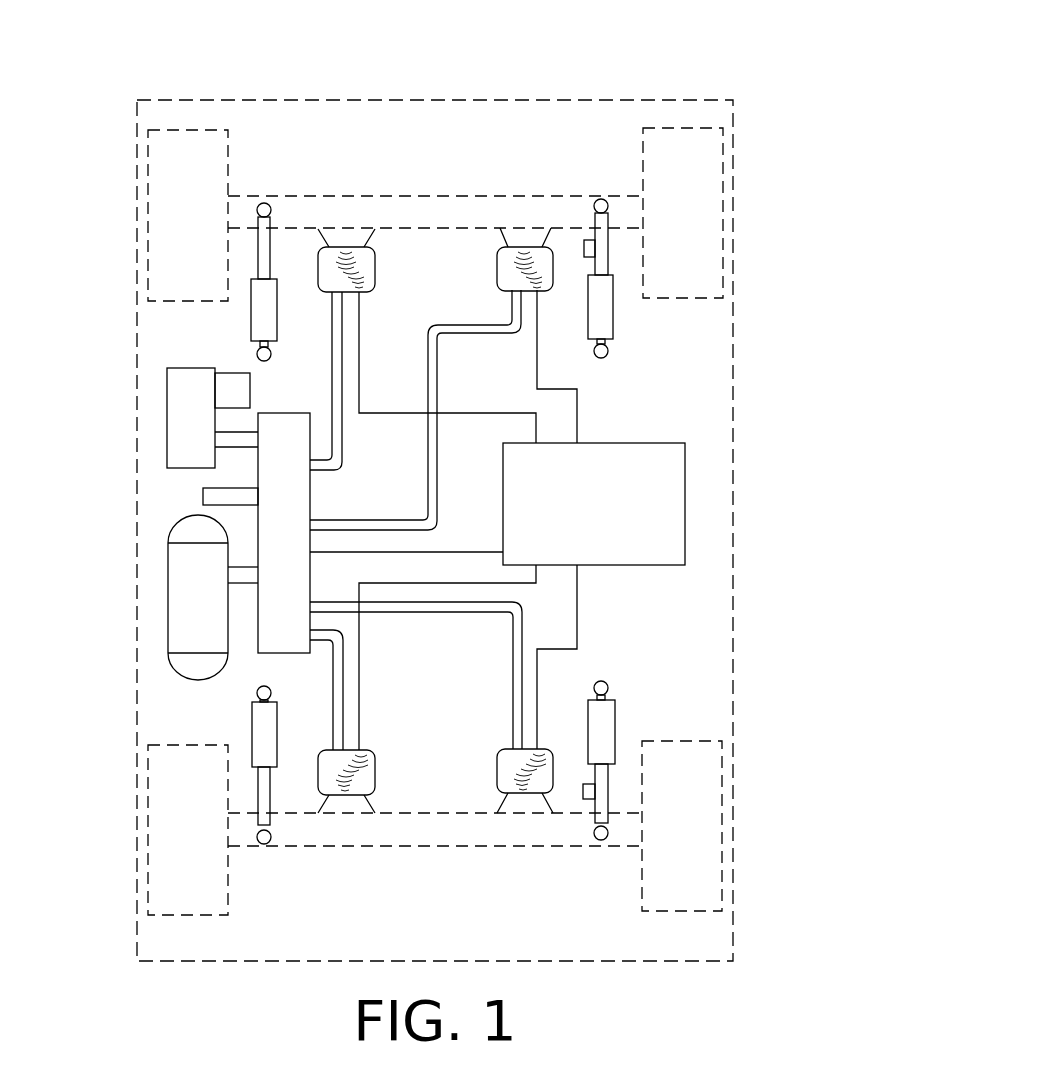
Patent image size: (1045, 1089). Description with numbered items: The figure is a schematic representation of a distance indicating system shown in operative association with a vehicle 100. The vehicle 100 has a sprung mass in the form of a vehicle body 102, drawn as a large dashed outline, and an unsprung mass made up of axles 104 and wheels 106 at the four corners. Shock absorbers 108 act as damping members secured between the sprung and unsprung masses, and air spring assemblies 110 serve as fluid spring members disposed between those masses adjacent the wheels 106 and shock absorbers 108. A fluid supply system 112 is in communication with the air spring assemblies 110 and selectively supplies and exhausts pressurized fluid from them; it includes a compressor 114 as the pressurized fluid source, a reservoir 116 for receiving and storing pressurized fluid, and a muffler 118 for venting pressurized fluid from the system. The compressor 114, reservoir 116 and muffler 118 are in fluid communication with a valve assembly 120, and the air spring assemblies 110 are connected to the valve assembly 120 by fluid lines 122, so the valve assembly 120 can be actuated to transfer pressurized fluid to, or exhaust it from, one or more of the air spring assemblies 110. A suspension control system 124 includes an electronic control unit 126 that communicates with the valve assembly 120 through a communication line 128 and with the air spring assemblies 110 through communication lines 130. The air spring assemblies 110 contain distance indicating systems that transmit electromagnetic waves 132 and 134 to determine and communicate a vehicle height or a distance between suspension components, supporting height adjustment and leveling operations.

The vehicle 100 is at (645, 80).
The vehicle body 102 is at (422, 97).
The axles 104 is at (402, 217).
The wheels 106 is at (173, 220).
The shock absorbers 108 is at (262, 307).
The air spring assemblies 110 is at (437, 522).
The fluid supply system 112 is at (230, 524).
The compressor 114 is at (167, 408).
The reservoir 116 is at (185, 610).
The muffler 118 is at (210, 497).
The valve assembly 120 is at (292, 505).
The fluid lines 122 is at (337, 340).
The suspension control system 124 is at (661, 471).
The electronic control unit 126 is at (688, 505).
The communication line 128 is at (430, 550).
The communication lines 130 is at (360, 320).
The electromagnetic waves 132 is at (368, 283).
The electromagnetic waves 134 is at (357, 261).